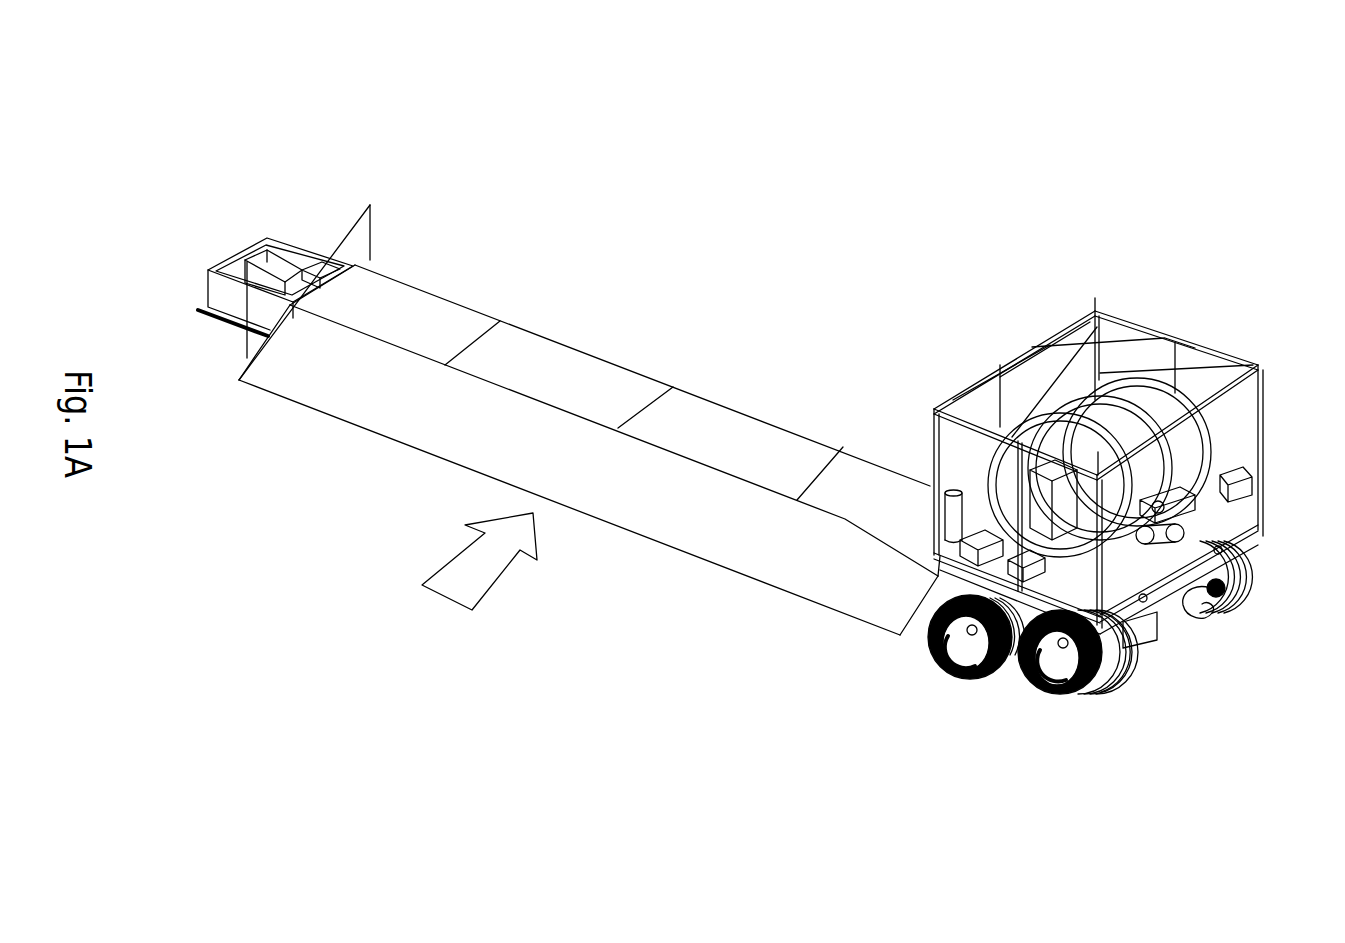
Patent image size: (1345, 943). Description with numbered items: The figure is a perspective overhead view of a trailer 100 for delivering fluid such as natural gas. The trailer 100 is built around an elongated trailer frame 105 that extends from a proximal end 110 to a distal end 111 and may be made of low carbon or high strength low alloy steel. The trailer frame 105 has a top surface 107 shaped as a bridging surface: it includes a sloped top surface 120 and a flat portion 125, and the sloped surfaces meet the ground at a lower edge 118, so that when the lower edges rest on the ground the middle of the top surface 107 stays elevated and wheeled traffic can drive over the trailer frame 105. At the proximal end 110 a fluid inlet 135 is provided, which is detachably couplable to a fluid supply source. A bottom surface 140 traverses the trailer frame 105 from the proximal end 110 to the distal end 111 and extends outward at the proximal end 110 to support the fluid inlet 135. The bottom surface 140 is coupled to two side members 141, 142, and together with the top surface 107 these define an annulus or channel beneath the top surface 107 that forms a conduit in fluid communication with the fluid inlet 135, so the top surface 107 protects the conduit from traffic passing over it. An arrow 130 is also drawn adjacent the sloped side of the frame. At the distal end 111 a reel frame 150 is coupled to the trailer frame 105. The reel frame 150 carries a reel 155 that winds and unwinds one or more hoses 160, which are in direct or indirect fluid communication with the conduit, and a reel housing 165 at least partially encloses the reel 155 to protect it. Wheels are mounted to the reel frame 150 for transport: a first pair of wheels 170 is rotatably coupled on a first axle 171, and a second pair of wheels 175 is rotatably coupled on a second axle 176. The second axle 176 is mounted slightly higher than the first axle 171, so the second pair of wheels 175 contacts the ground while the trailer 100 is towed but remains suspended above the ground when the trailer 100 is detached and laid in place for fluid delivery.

The trailer 100 is at (1162, 110).
The trailer frame 105 is at (672, 327).
The top surface 107 is at (313, 242).
The proximal end 110 is at (252, 358).
The distal end 111 is at (913, 627).
The lower edge 118 is at (627, 531).
The sloped top surface 120 is at (445, 428).
The flat portion 125 is at (773, 443).
The direction of travel arrow 130 is at (479, 561).
The fluid inlet 135 is at (236, 268).
The bottom surface 140 is at (197, 313).
The side member 141 is at (215, 293).
The side member 142 is at (265, 238).
The reel frame 150 is at (1262, 533).
The reel 155 is at (1043, 500).
The hose 160 is at (1117, 488).
The reel housing 165 is at (1057, 333).
The first pair of wheels 170 is at (968, 682).
The first axle 171 is at (973, 628).
The second pair of wheels 175 is at (1067, 697).
The second axle 176 is at (1062, 643).